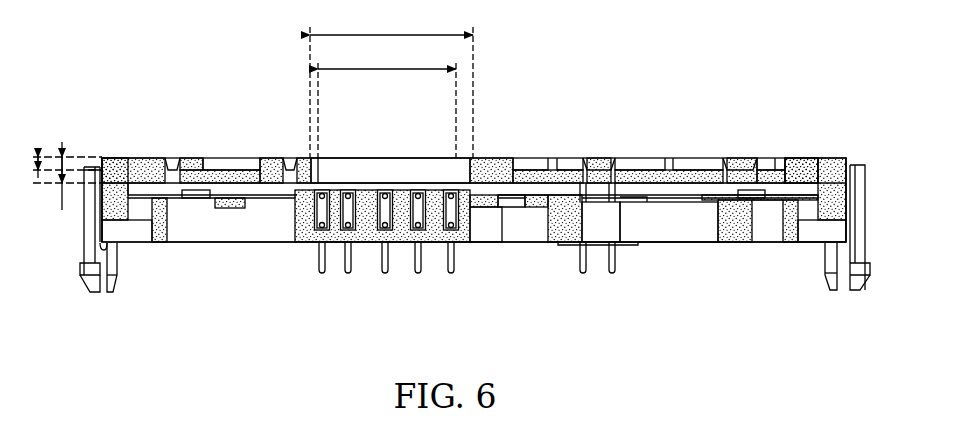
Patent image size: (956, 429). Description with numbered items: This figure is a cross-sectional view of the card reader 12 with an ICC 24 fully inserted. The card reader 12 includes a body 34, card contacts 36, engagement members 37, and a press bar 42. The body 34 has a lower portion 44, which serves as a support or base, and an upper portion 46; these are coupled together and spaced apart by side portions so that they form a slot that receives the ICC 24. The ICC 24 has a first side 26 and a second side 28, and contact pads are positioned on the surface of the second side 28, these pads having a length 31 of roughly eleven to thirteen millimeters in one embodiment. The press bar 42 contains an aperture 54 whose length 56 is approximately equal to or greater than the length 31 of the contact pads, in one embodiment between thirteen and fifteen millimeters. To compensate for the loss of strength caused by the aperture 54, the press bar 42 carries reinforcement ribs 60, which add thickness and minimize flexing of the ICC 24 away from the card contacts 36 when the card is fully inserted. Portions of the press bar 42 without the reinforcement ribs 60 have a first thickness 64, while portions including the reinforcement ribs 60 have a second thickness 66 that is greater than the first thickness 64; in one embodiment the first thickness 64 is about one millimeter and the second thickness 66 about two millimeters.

The card reader 12 is at (125, 52).
The ICC 24 is at (232, 197).
The first side 26 is at (180, 158).
The second side 28 is at (170, 200).
The length 31 is at (380, 69).
The body 34 is at (818, 158).
The card contacts 36 is at (448, 260).
The engagement members 37 is at (80, 253).
The press bar 42 is at (603, 162).
The lower portion 44 is at (680, 227).
The upper portion 46 is at (743, 158).
The aperture 54 is at (392, 172).
The length 56 is at (390, 35).
The reinforcement ribs 60 is at (270, 160).
The first thickness 64 is at (58, 176).
The second thickness 66 is at (50, 160).